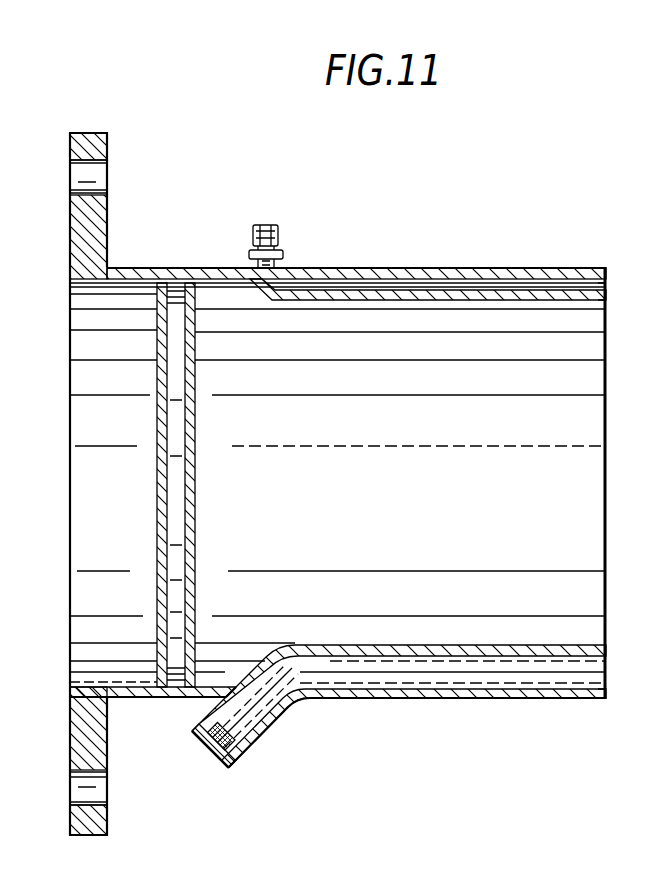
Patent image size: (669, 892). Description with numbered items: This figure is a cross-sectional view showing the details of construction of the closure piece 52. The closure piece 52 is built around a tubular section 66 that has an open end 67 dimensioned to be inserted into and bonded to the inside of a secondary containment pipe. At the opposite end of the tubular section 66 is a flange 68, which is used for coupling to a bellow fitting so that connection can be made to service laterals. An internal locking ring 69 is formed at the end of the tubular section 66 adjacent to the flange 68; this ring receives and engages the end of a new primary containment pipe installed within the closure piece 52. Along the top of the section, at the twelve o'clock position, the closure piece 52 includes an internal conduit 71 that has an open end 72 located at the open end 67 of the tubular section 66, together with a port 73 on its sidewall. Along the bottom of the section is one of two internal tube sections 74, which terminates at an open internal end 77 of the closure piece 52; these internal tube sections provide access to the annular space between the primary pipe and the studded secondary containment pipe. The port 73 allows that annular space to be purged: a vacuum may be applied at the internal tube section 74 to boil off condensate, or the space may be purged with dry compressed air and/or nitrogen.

The closure piece 52 is at (377, 700).
The tubular section 66 is at (493, 269).
The open end 67 is at (605, 478).
The flange 68 is at (108, 218).
The internal locking ring 69 is at (172, 494).
The internal conduit 71 is at (385, 290).
The open end 72 is at (608, 287).
The port 73 is at (279, 224).
The internal tube section 74 is at (480, 677).
The open internal end 77 is at (607, 672).